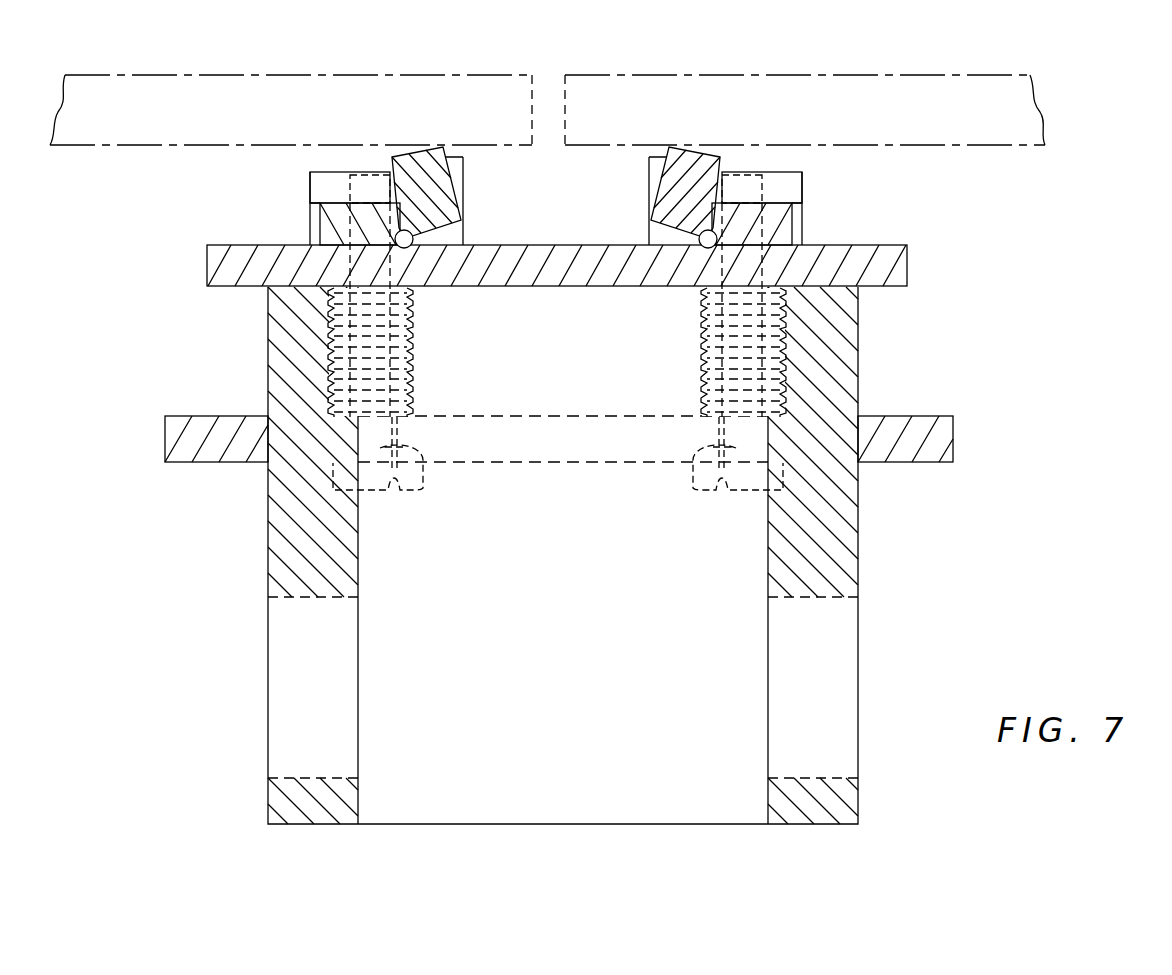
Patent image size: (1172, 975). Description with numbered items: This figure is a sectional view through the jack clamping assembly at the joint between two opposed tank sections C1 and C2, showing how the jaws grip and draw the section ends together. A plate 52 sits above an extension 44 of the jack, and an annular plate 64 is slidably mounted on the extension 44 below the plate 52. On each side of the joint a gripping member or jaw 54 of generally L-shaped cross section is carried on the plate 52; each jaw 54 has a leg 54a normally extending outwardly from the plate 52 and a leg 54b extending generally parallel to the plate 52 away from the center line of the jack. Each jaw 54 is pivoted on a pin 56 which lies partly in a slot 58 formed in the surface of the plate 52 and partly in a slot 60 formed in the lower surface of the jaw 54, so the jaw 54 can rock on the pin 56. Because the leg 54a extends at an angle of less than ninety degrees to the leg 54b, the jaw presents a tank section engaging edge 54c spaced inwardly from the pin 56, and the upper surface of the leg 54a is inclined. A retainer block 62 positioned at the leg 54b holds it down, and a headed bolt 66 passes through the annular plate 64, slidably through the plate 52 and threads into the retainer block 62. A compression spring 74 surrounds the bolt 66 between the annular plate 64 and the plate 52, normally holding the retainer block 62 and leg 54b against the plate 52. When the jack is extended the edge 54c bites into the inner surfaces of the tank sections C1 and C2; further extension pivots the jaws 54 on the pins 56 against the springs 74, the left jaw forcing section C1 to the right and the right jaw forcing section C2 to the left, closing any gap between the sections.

The tank section C1 is at (207, 70).
The tank section C2 is at (989, 68).
The extension 44 is at (845, 555).
The plate 52 is at (902, 270).
The gripping member or jaw 54 is at (378, 160).
The leg 54a is at (415, 160).
The leg 54b is at (325, 212).
The tank section engaging edge 54c is at (663, 145).
The pin 56 is at (398, 250).
The slot 58 is at (415, 248).
The slot 60 is at (413, 236).
The retainer block 62 is at (312, 180).
The annular plate 64 is at (932, 450).
The headed bolt 66 is at (426, 485).
The compression spring 74 is at (418, 370).